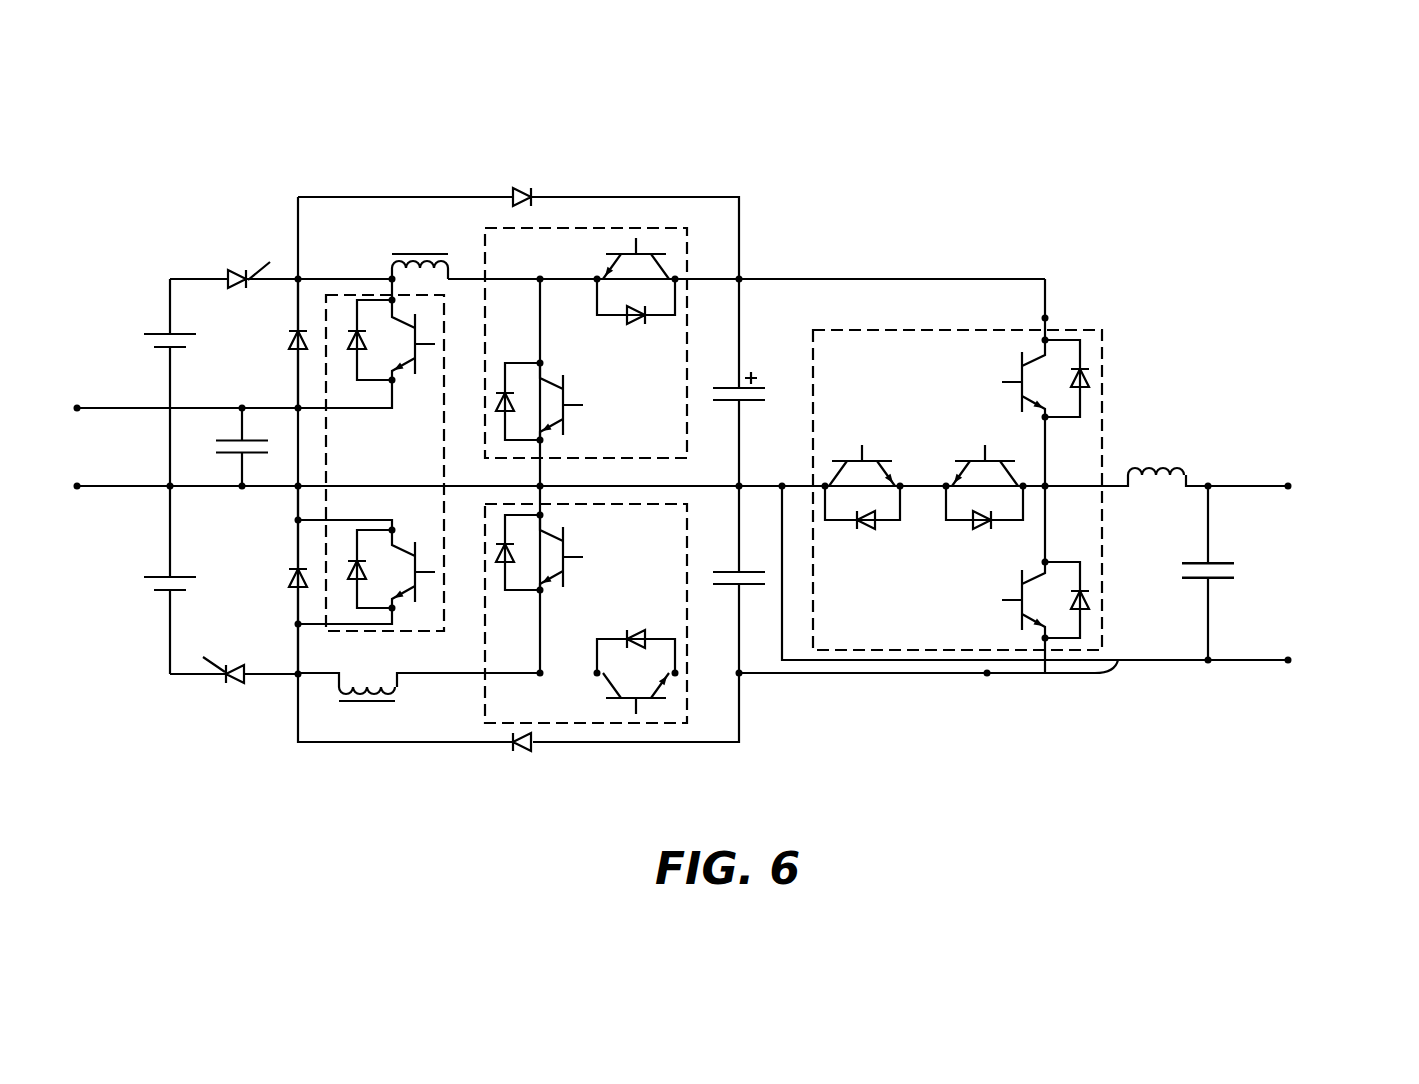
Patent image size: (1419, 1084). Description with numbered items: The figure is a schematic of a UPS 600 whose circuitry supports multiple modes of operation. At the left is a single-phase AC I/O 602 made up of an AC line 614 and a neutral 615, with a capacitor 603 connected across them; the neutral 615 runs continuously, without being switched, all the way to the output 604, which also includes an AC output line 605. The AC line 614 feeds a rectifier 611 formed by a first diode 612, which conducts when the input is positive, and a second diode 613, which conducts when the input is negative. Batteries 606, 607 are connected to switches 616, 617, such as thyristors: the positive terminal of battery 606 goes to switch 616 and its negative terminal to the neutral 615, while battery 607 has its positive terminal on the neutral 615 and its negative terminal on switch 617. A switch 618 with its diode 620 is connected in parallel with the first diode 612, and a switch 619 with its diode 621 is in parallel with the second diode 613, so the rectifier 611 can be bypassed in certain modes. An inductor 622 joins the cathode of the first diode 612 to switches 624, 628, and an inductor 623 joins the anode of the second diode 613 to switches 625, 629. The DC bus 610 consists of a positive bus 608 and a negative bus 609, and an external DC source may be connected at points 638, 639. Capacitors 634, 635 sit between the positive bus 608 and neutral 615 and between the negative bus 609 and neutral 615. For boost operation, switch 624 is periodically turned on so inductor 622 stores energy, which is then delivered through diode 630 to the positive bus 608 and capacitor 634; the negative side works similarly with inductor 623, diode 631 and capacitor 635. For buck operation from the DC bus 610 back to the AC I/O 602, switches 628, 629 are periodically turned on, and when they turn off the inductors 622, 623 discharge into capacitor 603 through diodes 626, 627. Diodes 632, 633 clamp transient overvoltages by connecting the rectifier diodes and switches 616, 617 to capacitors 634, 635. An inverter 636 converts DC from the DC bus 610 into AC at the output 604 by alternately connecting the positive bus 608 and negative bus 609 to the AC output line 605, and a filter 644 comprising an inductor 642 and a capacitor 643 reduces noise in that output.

The UPS 600 is at (1160, 156).
The AC I/O 602 is at (78, 485).
The capacitor 603 is at (217, 445).
The output 604 is at (1290, 489).
The AC output line 605 is at (1262, 489).
The battery 606 is at (145, 337).
The battery 607 is at (143, 587).
The positive bus 608 is at (1143, 373).
The negative bus 609 is at (1112, 656).
The DC bus 610 is at (1181, 464).
The rectifier 611 is at (188, 476).
The first diode 612 is at (291, 352).
The second diode 613 is at (290, 590).
The AC line 614 is at (152, 407).
The neutral 615 is at (157, 488).
The switch 616 is at (228, 270).
The switch 617 is at (238, 680).
The switch 618 is at (417, 320).
The switch 619 is at (417, 545).
The diode 620 is at (357, 332).
The diode 621 is at (352, 578).
The inductor 622 is at (417, 254).
The inductor 623 is at (352, 700).
The switch 624 is at (567, 414).
The switch 625 is at (566, 577).
The diode 626 is at (498, 394).
The diode 627 is at (498, 565).
The switch 628 is at (642, 254).
The switch 629 is at (659, 702).
The diode 630 is at (638, 324).
The diode 631 is at (637, 628).
The diode 632 is at (510, 193).
The diode 633 is at (514, 750).
The capacitor 634 is at (757, 384).
The capacitor 635 is at (748, 588).
The inverter 636 is at (1087, 464).
The point 638 is at (1046, 318).
The point 639 is at (989, 676).
The inductor 642 is at (1186, 467).
The capacitor 643 is at (1220, 562).
The filter 644 is at (1229, 527).